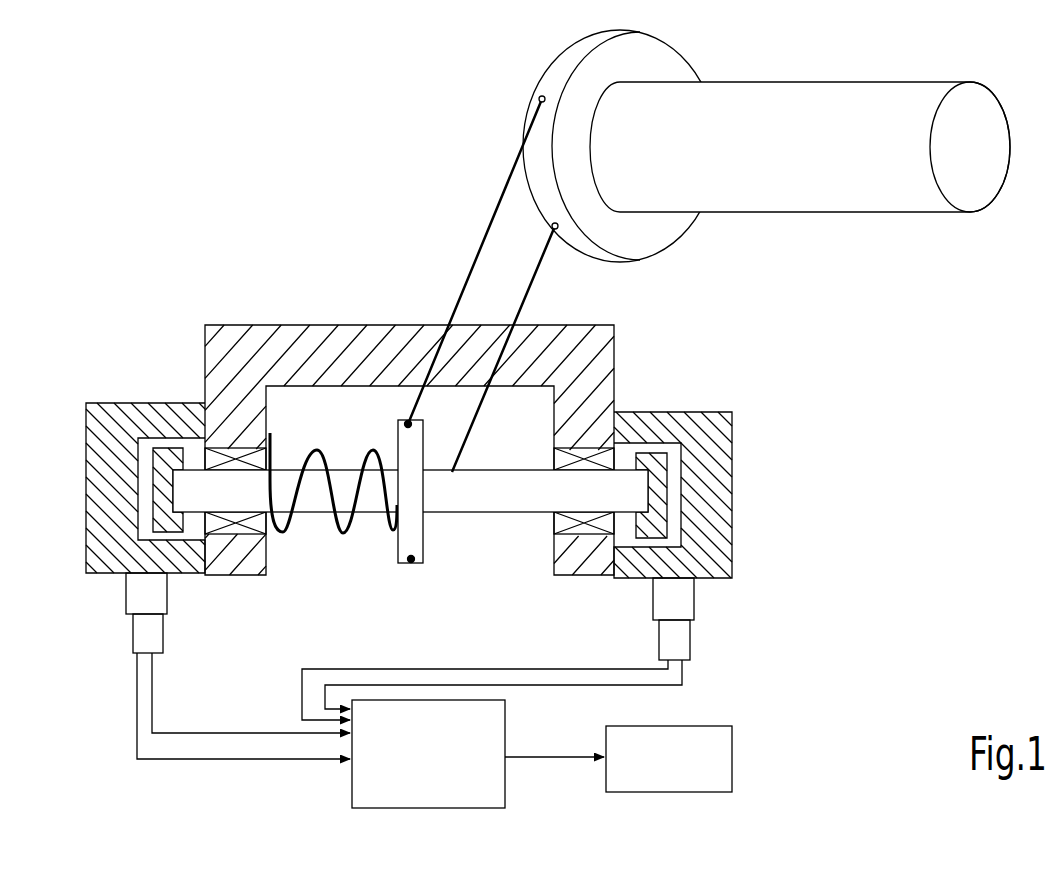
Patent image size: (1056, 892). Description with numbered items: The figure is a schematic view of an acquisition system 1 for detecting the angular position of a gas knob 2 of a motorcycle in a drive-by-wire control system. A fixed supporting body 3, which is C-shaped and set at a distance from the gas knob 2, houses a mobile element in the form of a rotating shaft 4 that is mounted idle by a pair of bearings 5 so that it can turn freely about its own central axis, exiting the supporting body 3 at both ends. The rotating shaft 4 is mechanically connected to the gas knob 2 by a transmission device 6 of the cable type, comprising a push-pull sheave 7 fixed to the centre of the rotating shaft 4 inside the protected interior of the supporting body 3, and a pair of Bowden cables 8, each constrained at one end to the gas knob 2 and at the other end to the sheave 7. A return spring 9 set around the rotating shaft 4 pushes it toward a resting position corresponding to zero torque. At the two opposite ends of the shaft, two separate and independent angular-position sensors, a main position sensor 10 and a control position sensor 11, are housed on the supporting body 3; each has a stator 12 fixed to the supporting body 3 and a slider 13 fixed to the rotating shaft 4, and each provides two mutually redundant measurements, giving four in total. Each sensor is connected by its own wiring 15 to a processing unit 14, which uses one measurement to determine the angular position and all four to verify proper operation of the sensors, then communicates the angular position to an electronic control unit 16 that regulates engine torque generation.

The acquisition system 1 is at (823, 602).
The gas knob 2 is at (810, 203).
The fixed supporting body 3 is at (267, 338).
The rotating shaft 4 is at (482, 505).
The bearings 5 is at (240, 528).
The transmission device 6 is at (421, 230).
The sheave 7 is at (420, 563).
The cables 8 is at (478, 248).
The return spring 9 is at (340, 537).
The main position sensor 10 is at (757, 507).
The control position sensor 11 is at (72, 410).
The stator 12 is at (143, 408).
The slider 13 is at (157, 508).
The processing unit 14 is at (402, 767).
The wiring 15 is at (107, 617).
The electronic control unit 16 is at (651, 777).